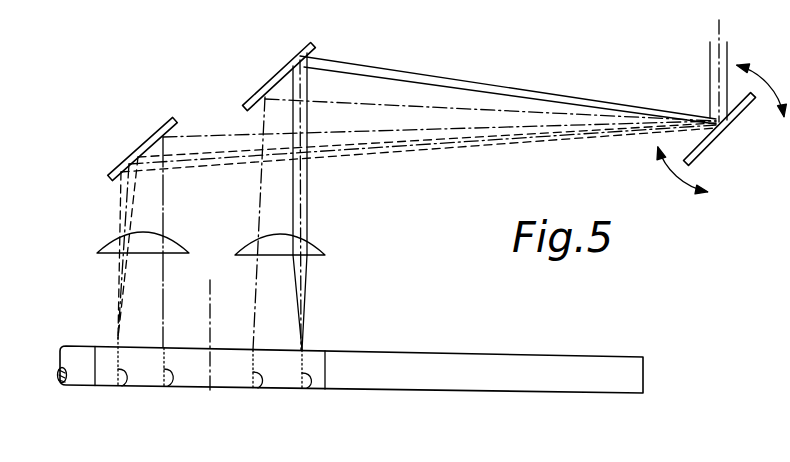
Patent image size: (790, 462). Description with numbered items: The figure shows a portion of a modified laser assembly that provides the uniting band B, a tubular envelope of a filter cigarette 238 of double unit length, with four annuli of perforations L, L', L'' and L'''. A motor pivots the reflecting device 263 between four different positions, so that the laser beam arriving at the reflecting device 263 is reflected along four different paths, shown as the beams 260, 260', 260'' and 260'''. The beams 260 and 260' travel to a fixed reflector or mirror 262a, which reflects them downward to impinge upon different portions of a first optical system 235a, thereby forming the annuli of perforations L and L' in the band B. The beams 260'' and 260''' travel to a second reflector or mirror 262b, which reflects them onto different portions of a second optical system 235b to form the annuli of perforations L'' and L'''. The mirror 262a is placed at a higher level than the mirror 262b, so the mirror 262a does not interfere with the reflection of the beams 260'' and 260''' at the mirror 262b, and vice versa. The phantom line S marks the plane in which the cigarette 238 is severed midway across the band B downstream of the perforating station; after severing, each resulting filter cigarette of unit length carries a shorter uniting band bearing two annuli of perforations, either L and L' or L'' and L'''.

The filter cigarette of double unit length 238 is at (427, 396).
The reflecting device 263 is at (740, 116).
The fixed reflector or mirror 262a is at (272, 80).
The second reflector or mirror 262b is at (143, 146).
The laser beam 260 is at (504, 201).
The laser beam 260' is at (464, 197).
The laser beam 260'' is at (439, 234).
The laser beam 260''' is at (387, 230).
The first optical system 235a is at (326, 252).
The second optical system 235b is at (98, 252).
The annulus of perforations L is at (313, 388).
The annulus of perforations L' is at (263, 391).
The annulus of perforations L'' is at (169, 391).
The annulus of perforations L''' is at (118, 386).
The phantom line S is at (210, 394).
The uniting band B is at (103, 386).